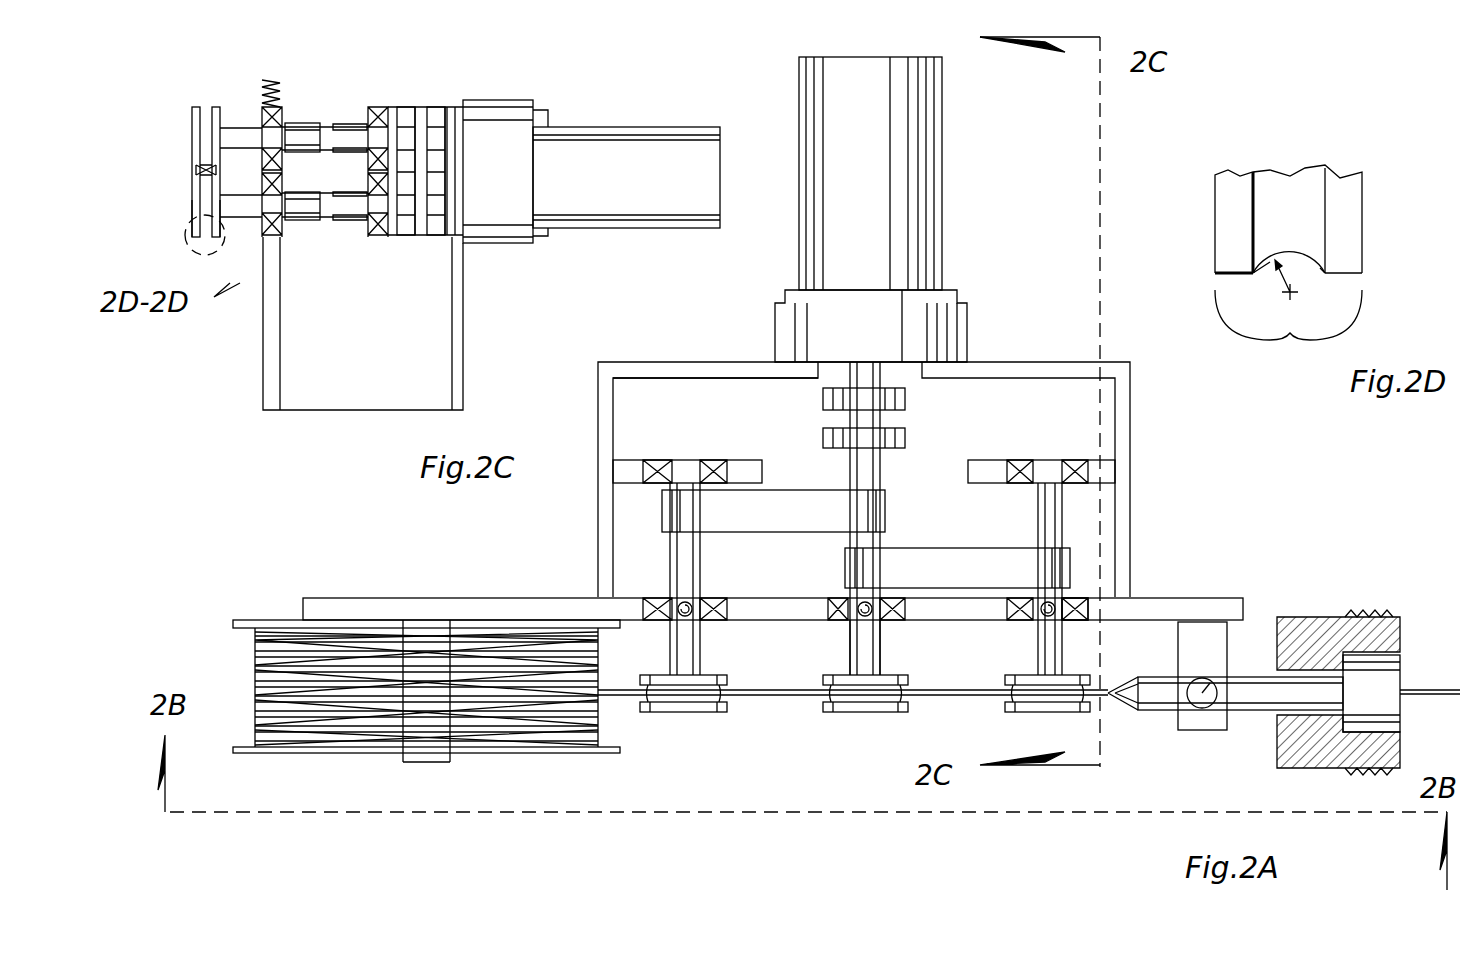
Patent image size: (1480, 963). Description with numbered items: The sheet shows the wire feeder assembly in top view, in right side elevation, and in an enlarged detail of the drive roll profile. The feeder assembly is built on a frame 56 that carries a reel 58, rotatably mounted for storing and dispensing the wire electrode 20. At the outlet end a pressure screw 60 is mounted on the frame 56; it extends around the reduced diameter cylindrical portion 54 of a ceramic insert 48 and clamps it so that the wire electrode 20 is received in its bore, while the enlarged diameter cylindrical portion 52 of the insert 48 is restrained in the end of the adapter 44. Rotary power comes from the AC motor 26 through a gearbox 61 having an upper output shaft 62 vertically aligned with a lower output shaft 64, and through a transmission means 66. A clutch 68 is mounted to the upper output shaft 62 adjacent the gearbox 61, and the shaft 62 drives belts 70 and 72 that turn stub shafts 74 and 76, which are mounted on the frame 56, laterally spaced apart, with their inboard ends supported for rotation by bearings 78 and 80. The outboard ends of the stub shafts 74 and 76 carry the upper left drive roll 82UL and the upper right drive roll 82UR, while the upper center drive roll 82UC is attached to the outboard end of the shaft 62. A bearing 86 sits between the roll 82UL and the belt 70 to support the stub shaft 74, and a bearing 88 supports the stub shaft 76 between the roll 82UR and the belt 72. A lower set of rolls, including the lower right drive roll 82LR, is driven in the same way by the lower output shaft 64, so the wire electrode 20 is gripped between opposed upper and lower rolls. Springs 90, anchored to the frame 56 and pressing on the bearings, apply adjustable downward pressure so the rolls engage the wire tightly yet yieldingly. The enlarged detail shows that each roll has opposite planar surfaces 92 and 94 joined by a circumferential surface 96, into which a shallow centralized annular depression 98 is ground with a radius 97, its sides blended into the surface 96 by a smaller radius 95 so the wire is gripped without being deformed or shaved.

In FIG. 2A, the wire electrode 20 is at (630, 700).
In FIG. 2C, the wire electrode 20 is at (205, 165).
In FIG. 2A, the AC motor 26 is at (799, 90).
In FIG. 2C, the AC motor 26 is at (630, 228).
In FIG. 2A, the adapter 44 is at (1325, 617).
In FIG. 2A, the insert 48 is at (1255, 660).
In FIG. 2A, the enlarged diameter cylindrical portion 52 is at (1350, 700).
In FIG. 2A, the reduced diameter cylindrical portion 54 is at (1255, 712).
In FIG. 2A, the frame 56 is at (1130, 438).
In FIG. 2C, the frame 56 is at (458, 382).
In FIG. 2A, the reel 58 is at (240, 620).
In FIG. 2A, the pressure screw 60 is at (1195, 680).
In FIG. 2A, the gearbox 61 is at (935, 318).
In FIG. 2C, the gearbox 61 is at (510, 106).
In FIG. 2A, the upper output shaft 62 is at (868, 370).
In FIG. 2C, the upper output shaft 62 is at (245, 128).
In FIG. 2A, the lower output shaft 64 is at (840, 625).
In FIG. 2C, the lower output shaft 64 is at (400, 215).
In FIG. 2A, the transmission means 66 is at (770, 410).
In FIG. 2A, the clutch 68 is at (930, 425).
In FIG. 2C, the clutch 68 is at (440, 110).
In FIG. 2A, the belt 70 is at (810, 496).
In FIG. 2C, the belt 70 is at (350, 127).
In FIG. 2A, the belt 72 is at (850, 575).
In FIG. 2C, the belt 72 is at (300, 130).
In FIG. 2A, the stub shaft 74 is at (665, 578).
In FIG. 2A, the stub shaft 76 is at (1045, 518).
In FIG. 2A, the bearing 78 is at (660, 465).
In FIG. 2A, the bearing 80 is at (1015, 462).
In FIG. 2C, the bearing 80 is at (435, 110).
In FIG. 2A, the upper left drive roll 82UL is at (660, 714).
In FIG. 2A, the upper center drive roll 82UC is at (848, 714).
In FIG. 2A, the upper right drive roll 82UR is at (1050, 714).
In FIG. 2C, the upper right drive roll 82UR is at (205, 107).
In FIG. 2C, the lower right drive roll 82LR is at (215, 240).
In FIG. 2A, the bearing 86 is at (720, 622).
In FIG. 2A, the bearing 88 is at (1085, 600).
In FIG. 2C, the bearing 88 is at (260, 110).
In FIG. 2A, the spring 90 is at (690, 612).
In FIG. 2C, the spring 90 is at (275, 82).
In FIG. 2D, the planar surface 92 is at (1362, 210).
In FIG. 2D, the planar surface 94 is at (1215, 218).
In FIG. 2D, the radius 95 is at (1255, 270).
In FIG. 2D, the circumferential surface 96 is at (1290, 333).
In FIG. 2D, the radius 97 is at (1290, 292).
In FIG. 2D, the annular depression 98 is at (1290, 252).